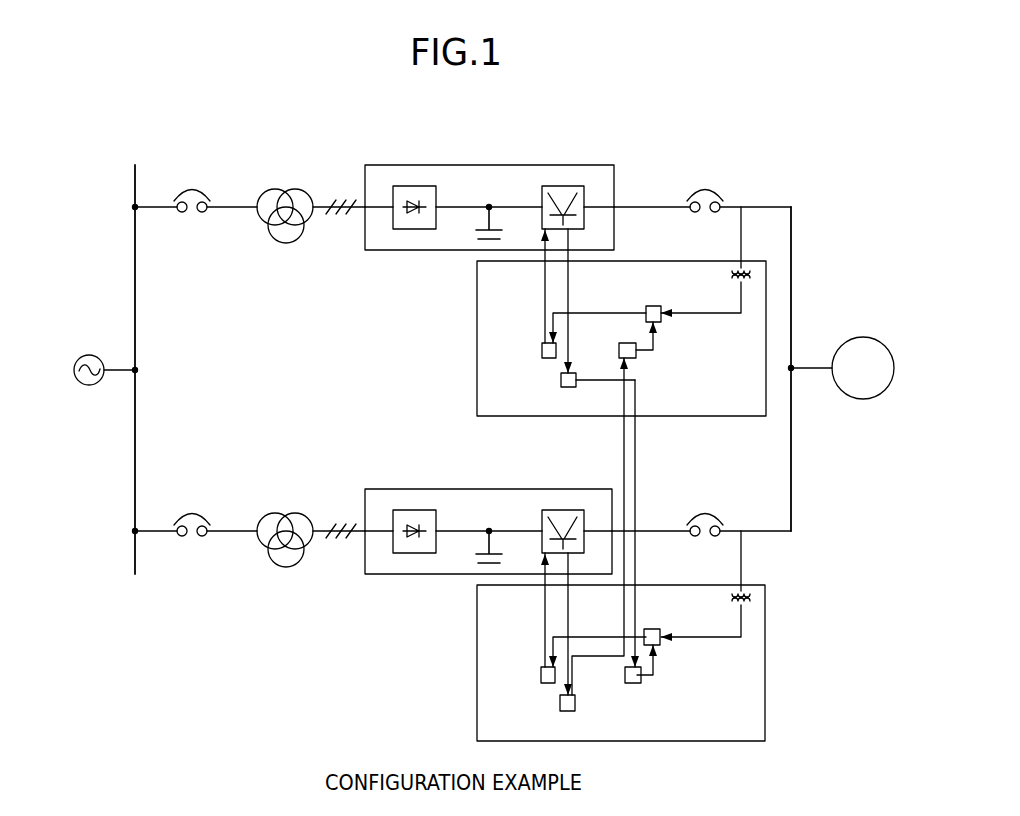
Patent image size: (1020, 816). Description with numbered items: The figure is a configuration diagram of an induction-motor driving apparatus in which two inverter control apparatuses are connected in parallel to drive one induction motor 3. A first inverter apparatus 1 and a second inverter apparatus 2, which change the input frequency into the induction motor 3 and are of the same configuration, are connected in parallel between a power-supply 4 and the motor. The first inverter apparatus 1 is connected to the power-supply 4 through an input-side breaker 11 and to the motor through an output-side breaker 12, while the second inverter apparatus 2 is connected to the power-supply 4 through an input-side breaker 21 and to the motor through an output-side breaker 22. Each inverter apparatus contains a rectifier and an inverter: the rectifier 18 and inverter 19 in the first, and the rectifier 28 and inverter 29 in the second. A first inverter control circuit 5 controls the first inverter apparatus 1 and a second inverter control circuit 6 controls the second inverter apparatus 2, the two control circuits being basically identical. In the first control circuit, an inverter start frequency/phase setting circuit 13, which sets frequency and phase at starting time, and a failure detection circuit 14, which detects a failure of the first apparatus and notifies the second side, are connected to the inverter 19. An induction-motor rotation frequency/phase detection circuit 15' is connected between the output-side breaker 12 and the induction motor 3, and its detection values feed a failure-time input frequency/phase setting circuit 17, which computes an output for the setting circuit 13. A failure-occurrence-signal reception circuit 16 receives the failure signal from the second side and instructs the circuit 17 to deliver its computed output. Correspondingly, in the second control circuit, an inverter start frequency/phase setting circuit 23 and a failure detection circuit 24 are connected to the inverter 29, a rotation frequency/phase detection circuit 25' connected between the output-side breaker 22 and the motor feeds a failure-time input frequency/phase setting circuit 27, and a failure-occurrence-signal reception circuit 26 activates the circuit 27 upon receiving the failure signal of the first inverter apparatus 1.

The first inverter apparatus 1 is at (484, 185).
The second inverter apparatus 2 is at (483, 509).
The induction motor 3 is at (864, 337).
The power-supply 4 is at (91, 355).
The first inverter control circuit 5 is at (600, 311).
The second inverter control circuit 6 is at (599, 560).
The input-side breaker 11 is at (193, 190).
The output-side breaker 12 is at (706, 190).
The inverter start frequency/phase setting circuit 13 is at (542, 350).
The failure detection circuit 14 is at (561, 380).
The induction-motor rotation frequency/phase detection circuit 15' is at (713, 296).
The failure-occurrence-signal reception circuit 16 is at (632, 358).
The failure-time input frequency/phase setting circuit 17 is at (653, 306).
The rectifier 18 is at (420, 186).
The inverter 19 is at (566, 186).
The input-side breaker 21 is at (193, 514).
The output-side breaker 22 is at (706, 514).
The inverter start frequency/phase setting circuit 23 is at (541, 675).
The failure detection circuit 24 is at (560, 703).
The induction-motor rotation frequency/phase detection circuit 25' is at (713, 618).
The failure-occurrence-signal reception circuit 26 is at (632, 683).
The failure-time input frequency/phase setting circuit 27 is at (653, 629).
The rectifier 28 is at (420, 510).
The inverter 29 is at (566, 510).